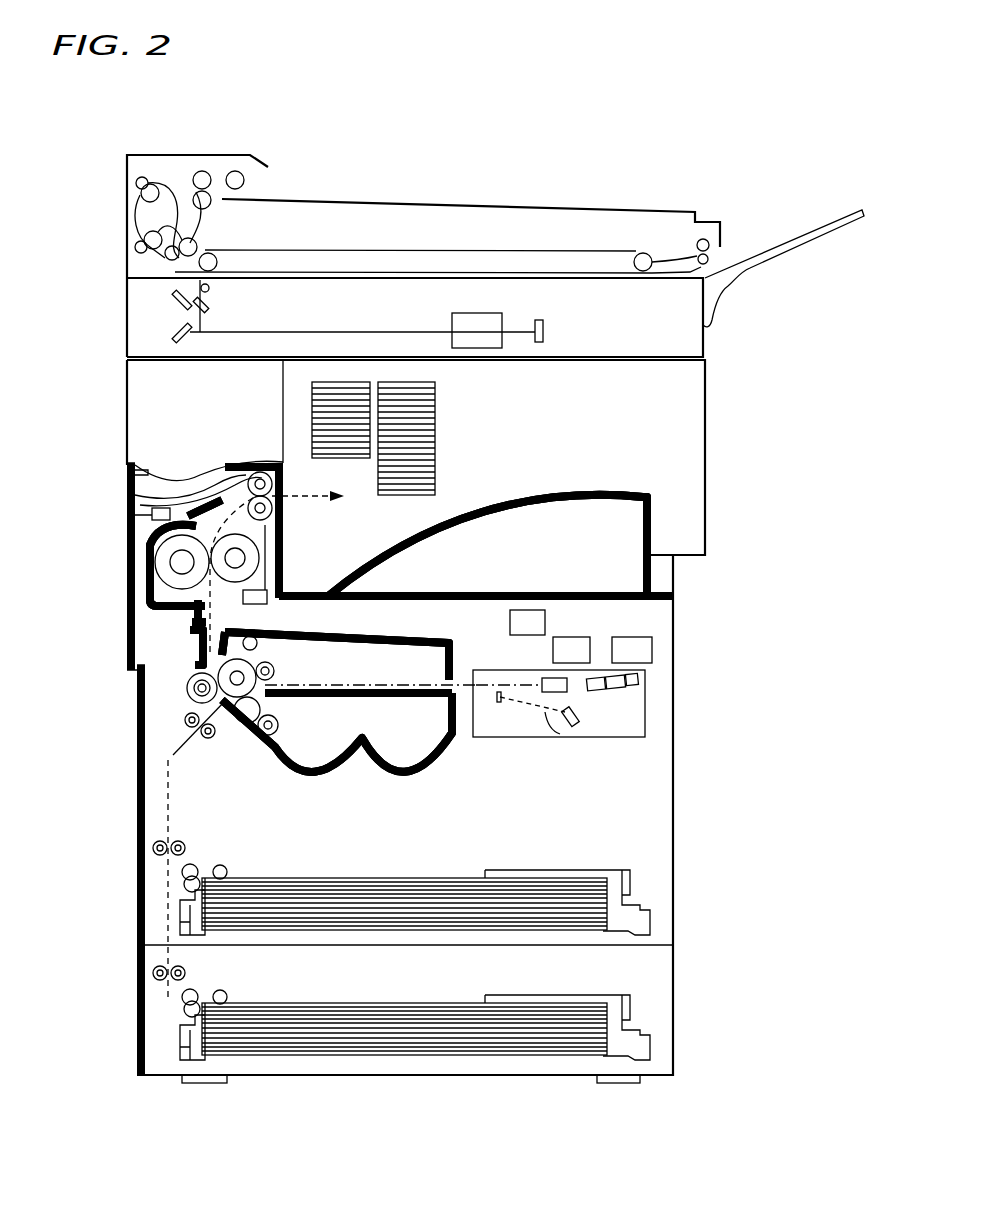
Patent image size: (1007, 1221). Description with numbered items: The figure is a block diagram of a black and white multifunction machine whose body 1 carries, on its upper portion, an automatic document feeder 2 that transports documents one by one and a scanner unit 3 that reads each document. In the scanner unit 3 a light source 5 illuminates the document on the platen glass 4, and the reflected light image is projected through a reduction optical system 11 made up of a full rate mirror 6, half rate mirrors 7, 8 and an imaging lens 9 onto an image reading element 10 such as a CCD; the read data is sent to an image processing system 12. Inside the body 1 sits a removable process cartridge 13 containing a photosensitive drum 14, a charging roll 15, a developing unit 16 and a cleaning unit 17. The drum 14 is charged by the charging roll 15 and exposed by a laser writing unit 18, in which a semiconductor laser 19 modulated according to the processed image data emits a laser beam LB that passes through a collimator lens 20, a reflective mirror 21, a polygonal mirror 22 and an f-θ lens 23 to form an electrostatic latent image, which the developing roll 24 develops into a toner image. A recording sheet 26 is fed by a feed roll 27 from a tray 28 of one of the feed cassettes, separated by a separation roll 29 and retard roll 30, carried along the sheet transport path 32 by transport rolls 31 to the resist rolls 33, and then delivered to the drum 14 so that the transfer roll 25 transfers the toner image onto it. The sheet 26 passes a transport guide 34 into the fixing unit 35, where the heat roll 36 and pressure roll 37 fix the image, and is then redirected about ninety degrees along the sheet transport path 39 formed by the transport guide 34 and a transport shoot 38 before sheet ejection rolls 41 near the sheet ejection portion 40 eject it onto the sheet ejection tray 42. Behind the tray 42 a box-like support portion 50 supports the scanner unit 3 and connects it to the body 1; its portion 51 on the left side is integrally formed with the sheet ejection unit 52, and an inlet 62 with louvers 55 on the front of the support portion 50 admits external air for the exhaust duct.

The body of the black and white multifunction machine 1 is at (680, 672).
The automatic document feeder 2 is at (112, 218).
The scanner unit 3 is at (112, 315).
The platen glass 4 is at (529, 272).
The light source 5 is at (211, 290).
The full rate mirror 6 is at (207, 311).
The half rate mirror 7 is at (176, 300).
The half rate mirror 8 is at (176, 335).
The imaging lens 9 is at (465, 313).
The image reading element 10 is at (545, 333).
The reduction optical system 11 is at (556, 300).
The image processing system 12 is at (630, 637).
The process cartridge 13 is at (354, 731).
The photosensitive drum 14 is at (259, 672).
The charging roll 15 is at (279, 671).
The developing unit 16 is at (450, 742).
The cleaning unit 17 is at (443, 640).
The laser writing unit 18 is at (636, 718).
The semiconductor laser 19 is at (578, 727).
The collimator lens 20 is at (558, 736).
The reflective mirror 21 is at (500, 705).
The polygonal mirror 22 is at (614, 692).
The f-θ lens 23 is at (545, 672).
The developing roll 24 is at (261, 710).
The transfer roll 25 is at (186, 688).
The recording sheet 26 is at (370, 878).
The feed roll 27 is at (227, 868).
The tray 28 is at (555, 870).
The separation roll 29 is at (197, 865).
The retard roll 30 is at (184, 886).
The transport rolls 31 is at (152, 848).
The sheet transport path 32 is at (165, 790).
The resist rolls 33 is at (184, 722).
The transport guide 34 is at (188, 650).
The fixing unit 35 is at (140, 585).
The heat roll 36 is at (270, 558).
The pressure roll 37 is at (162, 560).
The transport shoot 38 is at (135, 502).
The sheet transport path 39 is at (132, 492).
The sheet ejection portion 40 is at (302, 487).
The sheet ejection rolls 41 is at (250, 470).
The sheet ejection tray 42 is at (500, 503).
The support portion 50 is at (690, 425).
The portion of the support portion 51 is at (143, 382).
The sheet ejection unit 52 is at (112, 515).
The louvers 55 is at (436, 383).
The inlet 62 is at (312, 400).
The laser beam LB is at (541, 722).